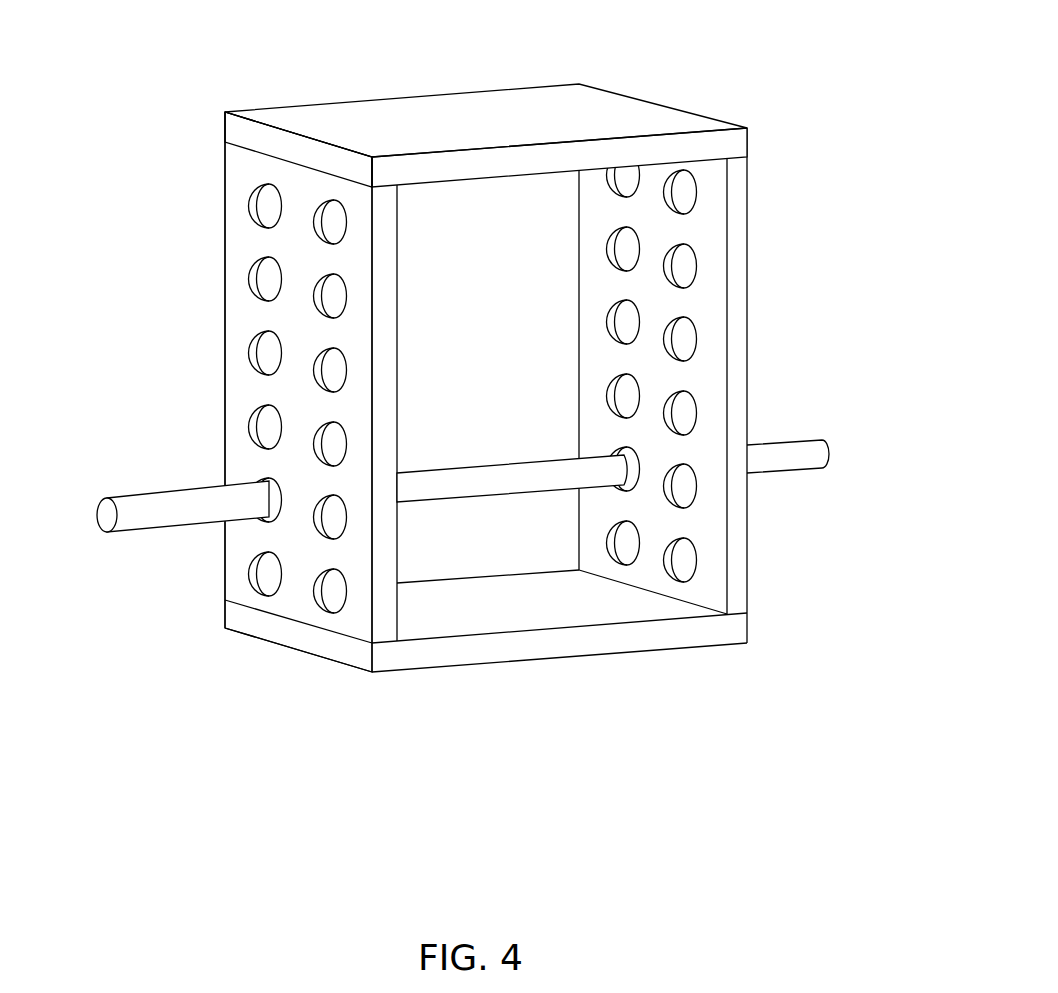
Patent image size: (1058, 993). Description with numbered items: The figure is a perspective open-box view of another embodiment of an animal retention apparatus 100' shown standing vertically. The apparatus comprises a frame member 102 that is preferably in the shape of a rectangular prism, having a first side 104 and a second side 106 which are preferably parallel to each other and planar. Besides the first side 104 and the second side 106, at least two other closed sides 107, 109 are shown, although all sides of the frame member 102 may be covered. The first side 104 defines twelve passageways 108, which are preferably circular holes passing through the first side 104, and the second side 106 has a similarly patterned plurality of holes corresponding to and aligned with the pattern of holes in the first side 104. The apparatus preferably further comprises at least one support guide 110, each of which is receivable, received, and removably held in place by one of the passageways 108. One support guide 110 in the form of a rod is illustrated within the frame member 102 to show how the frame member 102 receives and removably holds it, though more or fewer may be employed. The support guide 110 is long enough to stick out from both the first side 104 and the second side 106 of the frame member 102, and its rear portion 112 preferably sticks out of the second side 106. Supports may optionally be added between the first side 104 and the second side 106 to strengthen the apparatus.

The animal retention apparatus 100' is at (508, 383).
The frame member 102 is at (307, 633).
The first side 104 is at (222, 170).
The second side 106 is at (692, 305).
The closed side 107 is at (492, 114).
The passageways 108 is at (255, 276).
The closed side 109 is at (537, 643).
The support guide 110 is at (150, 510).
The rear portion 112 is at (810, 457).